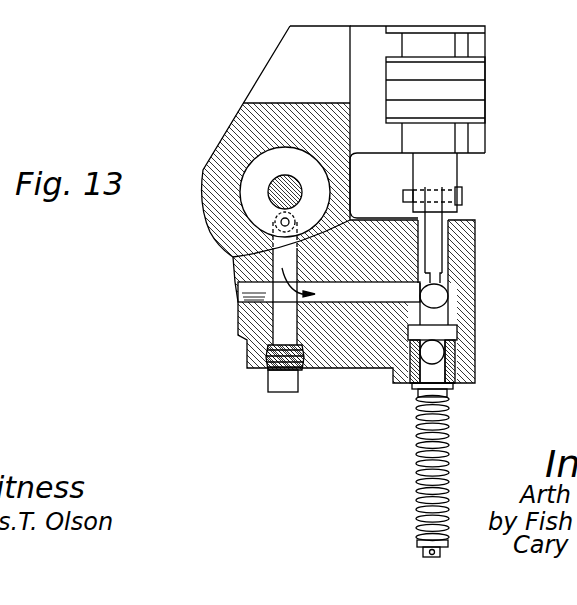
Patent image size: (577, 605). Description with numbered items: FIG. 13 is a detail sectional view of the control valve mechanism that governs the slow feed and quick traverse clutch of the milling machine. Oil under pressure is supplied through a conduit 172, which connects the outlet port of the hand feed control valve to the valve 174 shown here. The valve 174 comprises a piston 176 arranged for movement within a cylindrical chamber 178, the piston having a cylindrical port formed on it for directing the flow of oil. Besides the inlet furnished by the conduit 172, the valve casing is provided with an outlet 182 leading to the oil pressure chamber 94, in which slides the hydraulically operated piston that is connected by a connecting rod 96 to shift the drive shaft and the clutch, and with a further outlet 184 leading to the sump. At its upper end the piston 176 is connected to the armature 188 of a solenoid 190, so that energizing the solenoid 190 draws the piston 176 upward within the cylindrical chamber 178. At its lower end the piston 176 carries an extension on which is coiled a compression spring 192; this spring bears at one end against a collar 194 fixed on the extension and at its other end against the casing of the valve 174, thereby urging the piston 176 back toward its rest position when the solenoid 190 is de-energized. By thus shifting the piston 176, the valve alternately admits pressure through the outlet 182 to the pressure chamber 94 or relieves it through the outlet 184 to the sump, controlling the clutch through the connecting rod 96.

The pressure chamber 94 is at (225, 213).
The connecting rod 96 is at (296, 164).
The conduit 172 is at (453, 295).
The valve 174 is at (473, 268).
The piston 176 is at (437, 258).
The cylindrical chamber 178 is at (450, 220).
The outlet 182 is at (296, 217).
The outlet 184 is at (443, 328).
The armature 188 is at (437, 172).
The solenoid 190 is at (472, 90).
The compression spring 192 is at (416, 440).
The collar 194 is at (416, 544).